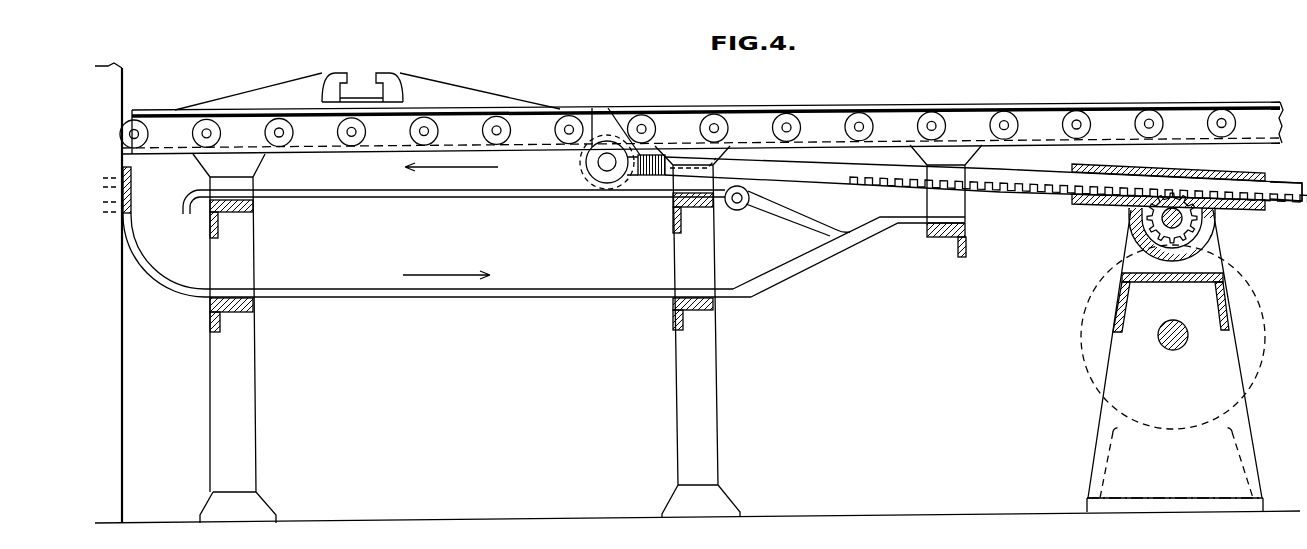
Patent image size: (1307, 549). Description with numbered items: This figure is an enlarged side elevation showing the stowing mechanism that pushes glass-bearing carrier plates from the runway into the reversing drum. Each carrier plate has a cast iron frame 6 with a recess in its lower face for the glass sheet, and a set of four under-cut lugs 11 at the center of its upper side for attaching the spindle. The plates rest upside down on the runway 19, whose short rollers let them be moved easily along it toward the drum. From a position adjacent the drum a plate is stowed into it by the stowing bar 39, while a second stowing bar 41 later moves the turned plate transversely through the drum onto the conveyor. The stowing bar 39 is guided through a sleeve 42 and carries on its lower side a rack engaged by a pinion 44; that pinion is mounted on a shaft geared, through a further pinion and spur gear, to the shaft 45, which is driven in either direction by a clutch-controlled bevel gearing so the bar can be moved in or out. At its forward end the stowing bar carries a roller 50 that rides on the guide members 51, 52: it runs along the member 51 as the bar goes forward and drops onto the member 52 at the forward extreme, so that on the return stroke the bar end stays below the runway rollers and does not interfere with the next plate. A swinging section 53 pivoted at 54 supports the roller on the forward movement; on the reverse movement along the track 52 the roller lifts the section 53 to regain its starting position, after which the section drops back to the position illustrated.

The cast iron frame 6 is at (482, 110).
The under-cut lugs 11 is at (377, 73).
The runway 19 is at (930, 117).
The stowing bar 39 is at (1015, 192).
The stowing bar 41 is at (1280, 185).
The sleeve 42 is at (1072, 203).
The pinion 44 is at (1133, 232).
The shaft 45 is at (1185, 345).
The roller 50 is at (584, 185).
The guide member 51 is at (486, 192).
The guide member 52 is at (522, 294).
The swinging section 53 is at (828, 220).
The pivot 54 is at (737, 210).